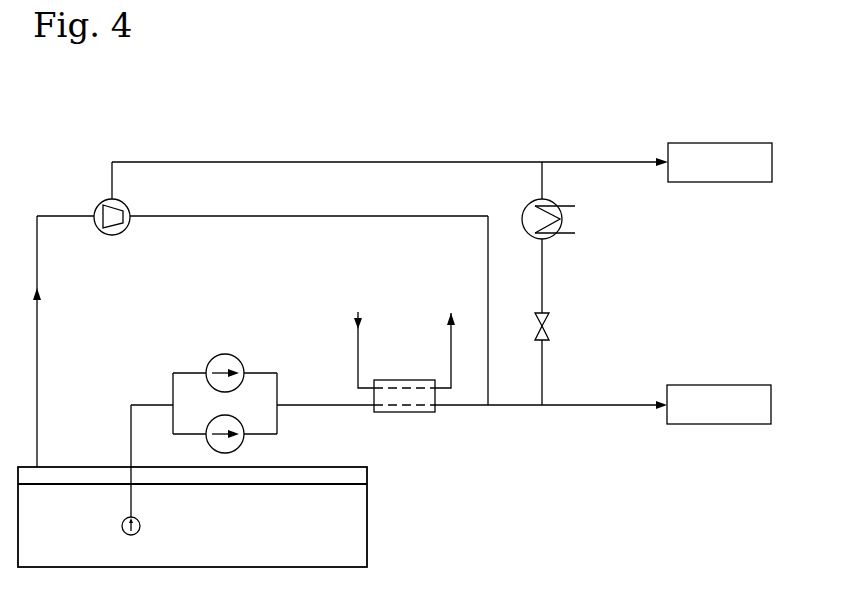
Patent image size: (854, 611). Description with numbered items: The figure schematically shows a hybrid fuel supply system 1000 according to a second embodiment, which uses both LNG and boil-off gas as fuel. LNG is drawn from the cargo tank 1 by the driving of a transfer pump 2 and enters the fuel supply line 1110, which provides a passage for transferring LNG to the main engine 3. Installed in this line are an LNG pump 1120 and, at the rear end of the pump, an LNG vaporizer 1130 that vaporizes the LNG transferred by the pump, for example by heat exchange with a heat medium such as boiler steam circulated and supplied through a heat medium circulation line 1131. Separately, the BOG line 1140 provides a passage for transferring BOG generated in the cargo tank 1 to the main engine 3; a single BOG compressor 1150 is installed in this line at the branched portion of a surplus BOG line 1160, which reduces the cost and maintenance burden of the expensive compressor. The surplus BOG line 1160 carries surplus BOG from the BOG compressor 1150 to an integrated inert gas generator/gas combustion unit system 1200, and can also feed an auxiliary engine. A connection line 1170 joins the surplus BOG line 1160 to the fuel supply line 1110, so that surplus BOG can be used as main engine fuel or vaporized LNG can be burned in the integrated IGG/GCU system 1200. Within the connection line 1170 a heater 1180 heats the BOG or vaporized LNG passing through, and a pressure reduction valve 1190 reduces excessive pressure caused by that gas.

The hybrid fuel supply system 1000 is at (448, 81).
The cargo tank 1 is at (367, 535).
The transfer pump 2 is at (131, 535).
The main engine 3 is at (719, 385).
The fuel supply line 1110 is at (312, 404).
The LNG pump 1120 is at (225, 354).
The LNG vaporizer 1130 is at (405, 380).
The heat medium circulation line 1131 is at (357, 341).
The BOG line 1140 is at (63, 217).
The BOG compressor 1150 is at (100, 200).
The surplus BOG line 1160 is at (252, 162).
The connection line 1170 is at (544, 276).
The heater 1180 is at (528, 206).
The pressure reduction valve 1190 is at (547, 330).
The integrated inert gas generator/gas combustion unit system 1200 is at (719, 143).